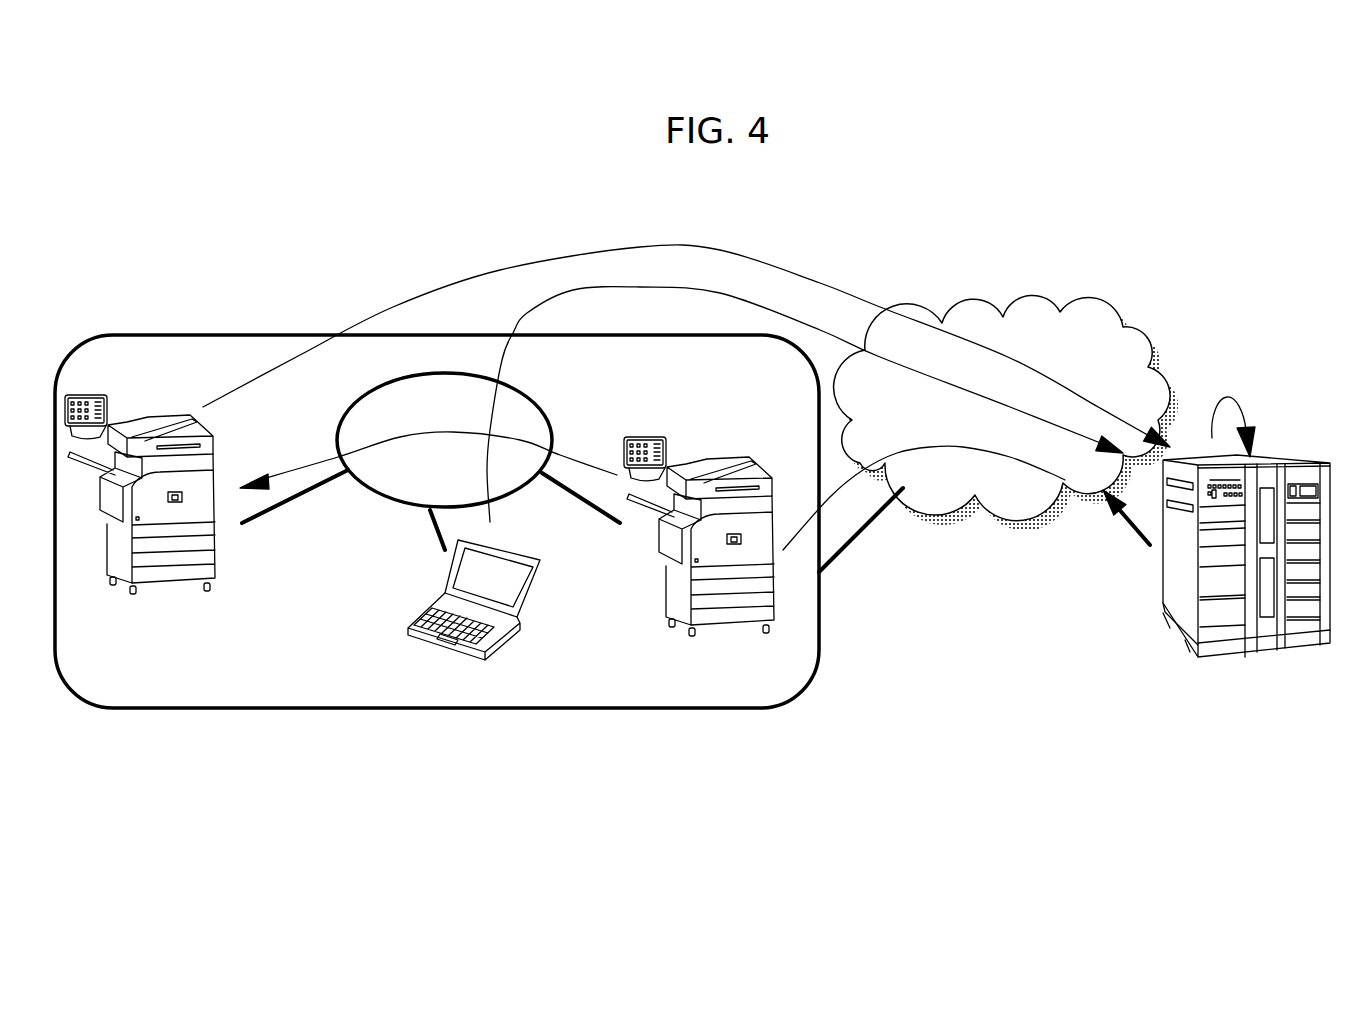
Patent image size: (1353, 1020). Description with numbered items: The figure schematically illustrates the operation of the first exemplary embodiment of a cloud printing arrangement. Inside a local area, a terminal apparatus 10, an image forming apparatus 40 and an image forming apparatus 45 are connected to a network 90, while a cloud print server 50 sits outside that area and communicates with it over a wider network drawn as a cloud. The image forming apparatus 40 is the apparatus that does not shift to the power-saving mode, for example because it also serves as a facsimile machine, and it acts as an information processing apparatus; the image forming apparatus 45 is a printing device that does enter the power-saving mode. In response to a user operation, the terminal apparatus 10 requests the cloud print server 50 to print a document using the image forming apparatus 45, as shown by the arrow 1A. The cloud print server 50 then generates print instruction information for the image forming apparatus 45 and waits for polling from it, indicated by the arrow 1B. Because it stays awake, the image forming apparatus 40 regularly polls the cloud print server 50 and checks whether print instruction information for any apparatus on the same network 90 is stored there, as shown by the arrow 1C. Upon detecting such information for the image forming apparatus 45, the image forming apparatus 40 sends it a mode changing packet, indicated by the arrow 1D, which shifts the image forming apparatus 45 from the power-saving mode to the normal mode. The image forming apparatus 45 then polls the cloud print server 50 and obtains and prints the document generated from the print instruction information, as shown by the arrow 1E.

The terminal apparatus 10 is at (512, 642).
The image forming apparatus 40 is at (723, 452).
The image forming apparatus 45 is at (165, 412).
The cloud print server 50 is at (1285, 458).
The network 90 is at (540, 400).
The arrow 1A is at (527, 313).
The arrow 1B is at (1230, 397).
The arrow 1C is at (938, 443).
The arrow 1D is at (435, 430).
The arrow 1E is at (393, 307).